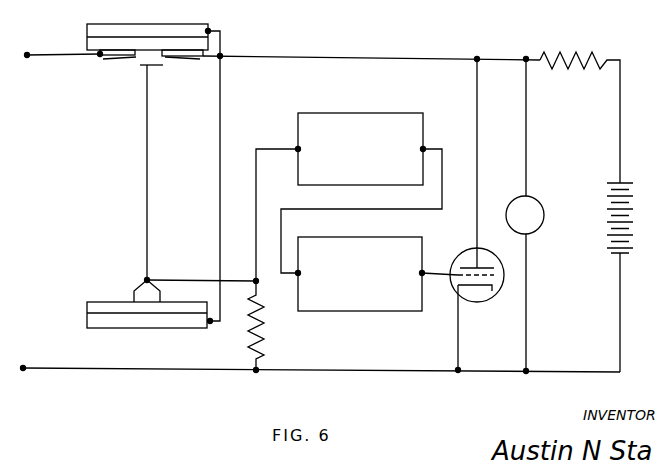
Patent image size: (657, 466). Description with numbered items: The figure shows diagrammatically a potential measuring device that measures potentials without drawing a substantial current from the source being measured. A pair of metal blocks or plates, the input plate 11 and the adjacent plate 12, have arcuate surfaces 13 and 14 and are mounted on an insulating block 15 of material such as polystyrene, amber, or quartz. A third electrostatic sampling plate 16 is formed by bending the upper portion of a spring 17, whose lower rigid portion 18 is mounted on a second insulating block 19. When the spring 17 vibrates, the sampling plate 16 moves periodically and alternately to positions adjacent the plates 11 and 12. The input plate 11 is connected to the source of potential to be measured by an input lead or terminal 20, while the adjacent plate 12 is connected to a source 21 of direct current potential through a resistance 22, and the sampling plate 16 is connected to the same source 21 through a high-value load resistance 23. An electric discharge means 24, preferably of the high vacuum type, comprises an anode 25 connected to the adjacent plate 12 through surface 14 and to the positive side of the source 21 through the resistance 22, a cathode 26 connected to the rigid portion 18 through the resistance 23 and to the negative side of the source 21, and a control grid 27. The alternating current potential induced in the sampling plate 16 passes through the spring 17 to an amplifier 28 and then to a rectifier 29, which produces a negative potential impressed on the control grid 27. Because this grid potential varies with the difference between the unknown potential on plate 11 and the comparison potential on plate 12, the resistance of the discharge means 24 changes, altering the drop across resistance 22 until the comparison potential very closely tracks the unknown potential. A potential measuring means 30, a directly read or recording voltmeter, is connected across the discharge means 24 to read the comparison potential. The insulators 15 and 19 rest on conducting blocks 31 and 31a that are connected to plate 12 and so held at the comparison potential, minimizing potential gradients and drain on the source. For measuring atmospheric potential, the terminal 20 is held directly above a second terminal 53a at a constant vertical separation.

The input plate 11 is at (98, 54).
The adjacent plate 12 is at (192, 57).
The arcuate surface 13 is at (104, 57).
The arcuate surface 14 is at (168, 57).
The insulating block 15 is at (87, 40).
The sampling plate 16 is at (142, 66).
The spring 17 is at (150, 182).
The lower rigid portion 18 is at (143, 281).
The insulating block 19 is at (87, 307).
The input lead or terminal 20 is at (66, 56).
The source of direct current potential 21 is at (607, 224).
The resistance 22 is at (567, 53).
The resistance 23 is at (270, 331).
The electric discharge means 24 is at (457, 273).
The anode 25 is at (467, 266).
The cathode 26 is at (490, 289).
The control grid 27 is at (460, 280).
The amplifier 28 is at (356, 111).
The rectifier 29 is at (343, 236).
The potential measuring means 30 is at (537, 203).
The block 31 is at (160, 25).
The block 31a is at (87, 326).
The terminal 53a is at (46, 368).